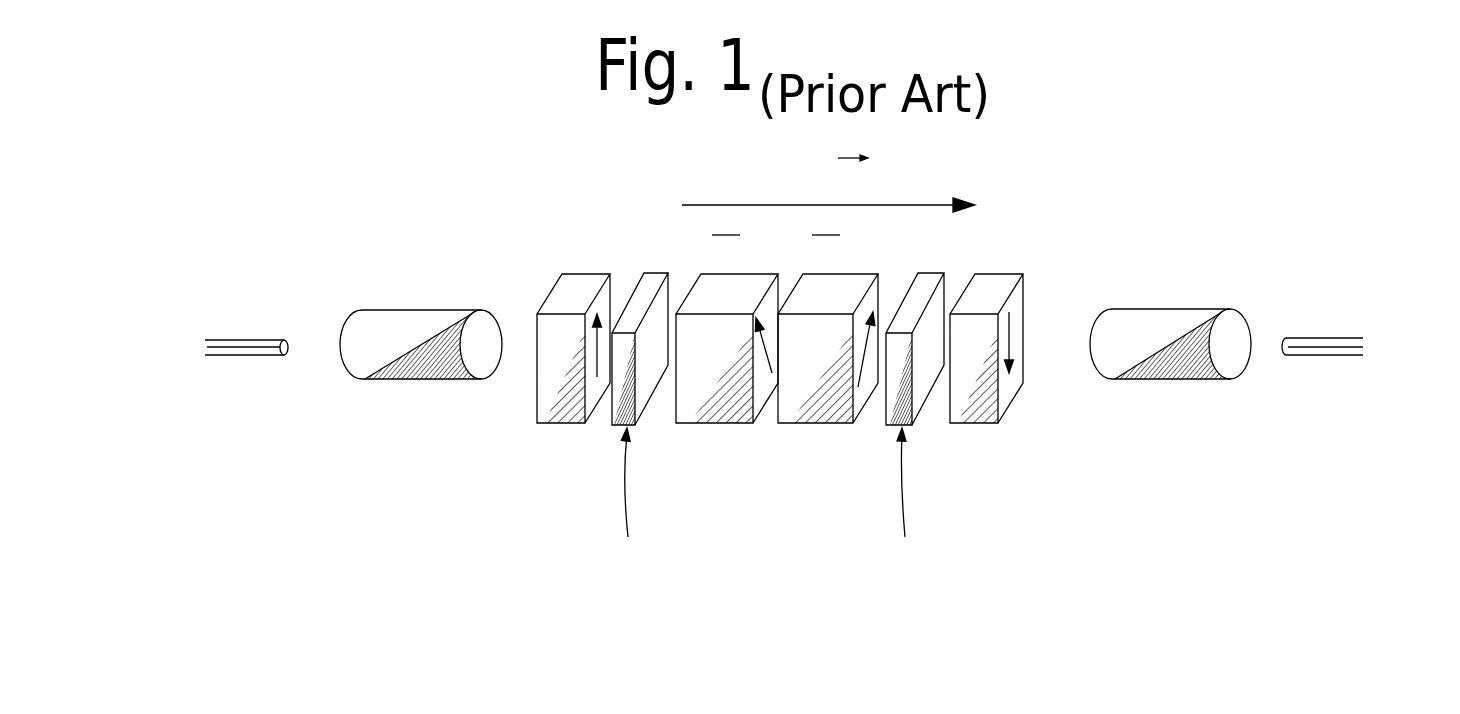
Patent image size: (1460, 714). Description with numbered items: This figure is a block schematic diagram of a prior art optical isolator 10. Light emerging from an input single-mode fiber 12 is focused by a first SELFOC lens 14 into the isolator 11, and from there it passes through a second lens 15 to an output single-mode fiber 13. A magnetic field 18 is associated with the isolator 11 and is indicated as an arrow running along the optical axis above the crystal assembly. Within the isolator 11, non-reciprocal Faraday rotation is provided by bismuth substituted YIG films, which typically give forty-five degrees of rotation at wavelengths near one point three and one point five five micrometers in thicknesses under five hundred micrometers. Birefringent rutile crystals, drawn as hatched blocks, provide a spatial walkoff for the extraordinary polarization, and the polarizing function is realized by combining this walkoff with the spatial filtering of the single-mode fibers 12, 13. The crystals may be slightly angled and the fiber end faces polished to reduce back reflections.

The isolator 10 is at (1013, 200).
The isolator 11 is at (590, 212).
The input single-mode fiber 12 is at (235, 332).
The output single-mode fiber 13 is at (1333, 332).
The first SELFOC lens 14 is at (410, 360).
The second lens 15 is at (1158, 362).
The magnetic field 18 is at (715, 203).